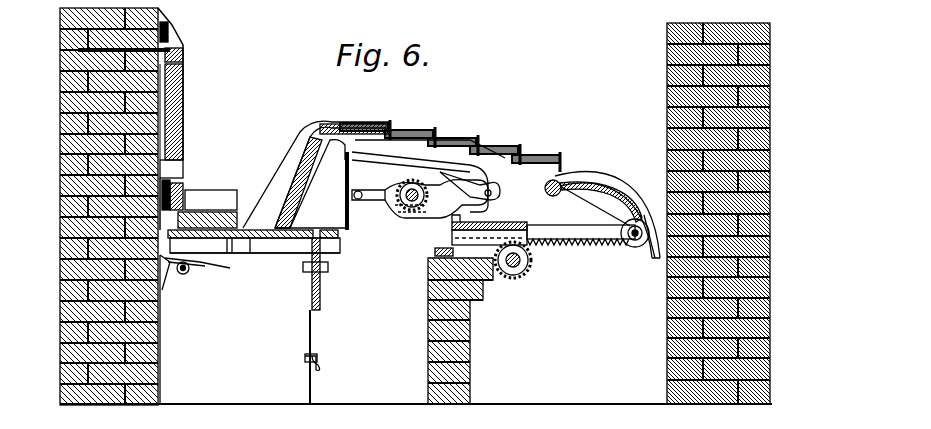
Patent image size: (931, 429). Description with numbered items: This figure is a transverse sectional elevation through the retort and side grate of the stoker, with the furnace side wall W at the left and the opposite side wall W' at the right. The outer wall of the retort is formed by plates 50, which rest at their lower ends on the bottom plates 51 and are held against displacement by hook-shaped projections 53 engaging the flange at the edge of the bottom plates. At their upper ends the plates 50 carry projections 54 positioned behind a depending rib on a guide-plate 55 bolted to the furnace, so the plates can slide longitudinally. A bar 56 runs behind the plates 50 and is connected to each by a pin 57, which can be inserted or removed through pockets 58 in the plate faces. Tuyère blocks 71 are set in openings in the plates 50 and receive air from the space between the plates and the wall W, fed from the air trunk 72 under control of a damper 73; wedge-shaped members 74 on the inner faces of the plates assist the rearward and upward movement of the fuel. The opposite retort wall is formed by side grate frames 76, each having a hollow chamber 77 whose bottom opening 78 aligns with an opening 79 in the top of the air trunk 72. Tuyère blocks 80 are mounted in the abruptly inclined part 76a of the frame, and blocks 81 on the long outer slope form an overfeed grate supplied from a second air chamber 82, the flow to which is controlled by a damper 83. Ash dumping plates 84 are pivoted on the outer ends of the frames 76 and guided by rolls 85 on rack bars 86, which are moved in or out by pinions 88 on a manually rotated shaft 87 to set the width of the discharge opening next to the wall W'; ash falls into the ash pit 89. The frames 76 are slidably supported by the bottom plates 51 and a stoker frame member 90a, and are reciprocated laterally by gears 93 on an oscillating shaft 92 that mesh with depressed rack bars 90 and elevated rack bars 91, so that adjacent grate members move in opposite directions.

The side wall W is at (128, 205).
The side wall W' is at (701, 206).
The guide-plate 55 is at (178, 36).
The projections 54 is at (183, 64).
The tuyère blocks 71 is at (185, 106).
The pockets or recesses 58 is at (175, 172).
The pin 57 is at (180, 192).
The plates or frames 50 is at (183, 196).
The bar 56 is at (190, 202).
The wedge-shaped members 74 is at (235, 200).
The plate or plates 51 is at (255, 245).
The opening 79 is at (285, 246).
The damper 73 is at (205, 265).
The hook-shaped projections 53 is at (170, 270).
The tuyère blocks 80 is at (300, 150).
The part of the frame 76a is at (300, 185).
The hollow chamber 77 is at (302, 208).
The opening 78 is at (345, 222).
The elevated rack bars 91 is at (372, 174).
The shaft 92 is at (412, 210).
The depressed rack bars 90 is at (370, 215).
The gears 93 is at (445, 170).
The blocks 81 is at (410, 140).
The frames 76 is at (470, 160).
The ash discharging or dumping plates 84 is at (593, 178).
The rack bars 86 is at (580, 242).
The rolls 85 is at (637, 247).
The stoker frame member 90a is at (498, 222).
The shaft 87 is at (511, 278).
The pinions 88 is at (528, 270).
The ash pit 89 is at (513, 331).
The air chamber 82 is at (344, 321).
The damper 83 is at (316, 358).
The air trunk 72 is at (204, 329).